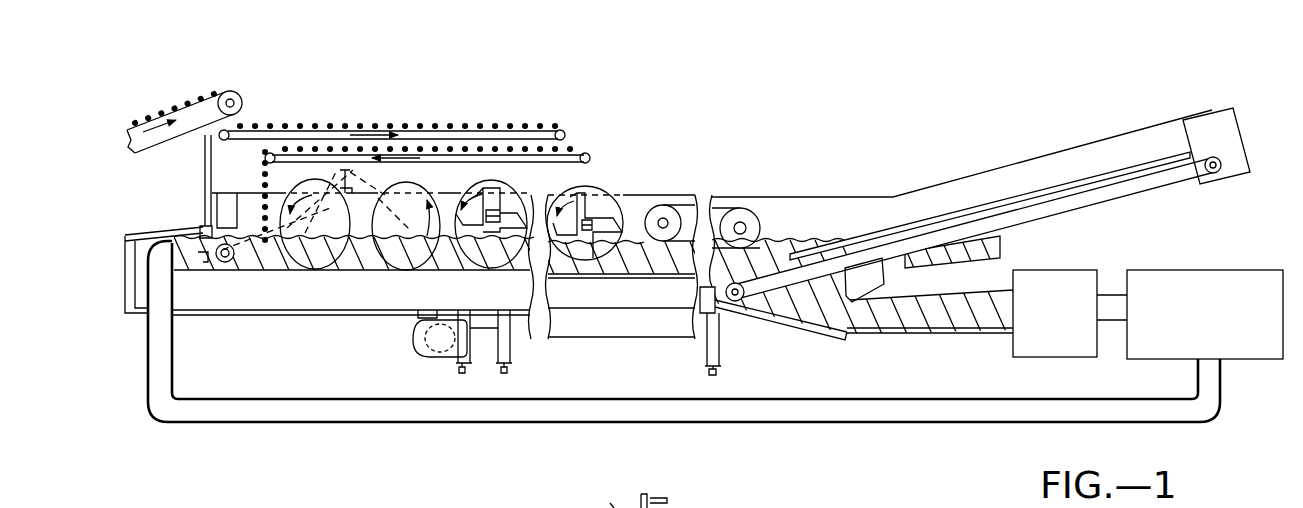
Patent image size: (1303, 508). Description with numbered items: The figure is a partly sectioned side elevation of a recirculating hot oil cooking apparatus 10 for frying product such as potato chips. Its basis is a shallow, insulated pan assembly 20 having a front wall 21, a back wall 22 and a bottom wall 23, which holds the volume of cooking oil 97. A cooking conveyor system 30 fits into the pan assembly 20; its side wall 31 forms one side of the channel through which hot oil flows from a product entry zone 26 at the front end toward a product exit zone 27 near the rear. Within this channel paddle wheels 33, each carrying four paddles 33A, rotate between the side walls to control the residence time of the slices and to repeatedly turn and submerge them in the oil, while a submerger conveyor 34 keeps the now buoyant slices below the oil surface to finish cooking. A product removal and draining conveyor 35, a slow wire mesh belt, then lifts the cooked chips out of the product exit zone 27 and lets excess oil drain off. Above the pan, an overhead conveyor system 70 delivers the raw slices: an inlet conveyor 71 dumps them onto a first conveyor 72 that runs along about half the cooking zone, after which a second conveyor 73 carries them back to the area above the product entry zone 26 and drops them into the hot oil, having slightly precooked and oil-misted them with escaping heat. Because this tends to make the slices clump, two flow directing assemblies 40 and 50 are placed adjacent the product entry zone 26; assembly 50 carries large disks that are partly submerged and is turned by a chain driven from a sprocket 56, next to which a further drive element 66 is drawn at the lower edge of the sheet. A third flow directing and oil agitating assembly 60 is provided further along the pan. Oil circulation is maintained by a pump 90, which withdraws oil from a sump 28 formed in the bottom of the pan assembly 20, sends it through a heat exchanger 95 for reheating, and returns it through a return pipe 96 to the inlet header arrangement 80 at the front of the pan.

The apparatus 10 is at (687, 169).
The pan assembly 20 is at (313, 320).
The front wall 21 is at (203, 232).
The back wall 22 is at (1001, 247).
The bottom wall 23 is at (405, 312).
The product entry zone 26 is at (263, 249).
The product exit zone 27 is at (820, 246).
The sump 28 is at (787, 305).
The cooking conveyor system 30 is at (805, 194).
The side wall 31 is at (826, 212).
The paddle wheel 33 is at (477, 261).
The paddle 33A is at (506, 242).
The submerger conveyor 34 is at (768, 226).
The product removal and draining conveyor 35 is at (1015, 198).
The flow directing assembly 40 is at (220, 268).
The flow directing assembly 50 is at (290, 272).
The sprocket 56 is at (612, 507).
The flow directing and oil agitating assembly 60 is at (378, 258).
The bracket 66 is at (628, 507).
The overhead conveyor system 70 is at (302, 108).
The inlet conveyor 71 is at (170, 115).
The first conveyor 72 is at (377, 125).
The second conveyor 73 is at (497, 150).
The inlet header arrangement 80 is at (177, 271).
The pump 90 is at (1063, 353).
The heat exchanger 95 is at (1172, 355).
The return pipe 96 is at (938, 408).
The volume of cooking oil 97 is at (617, 270).